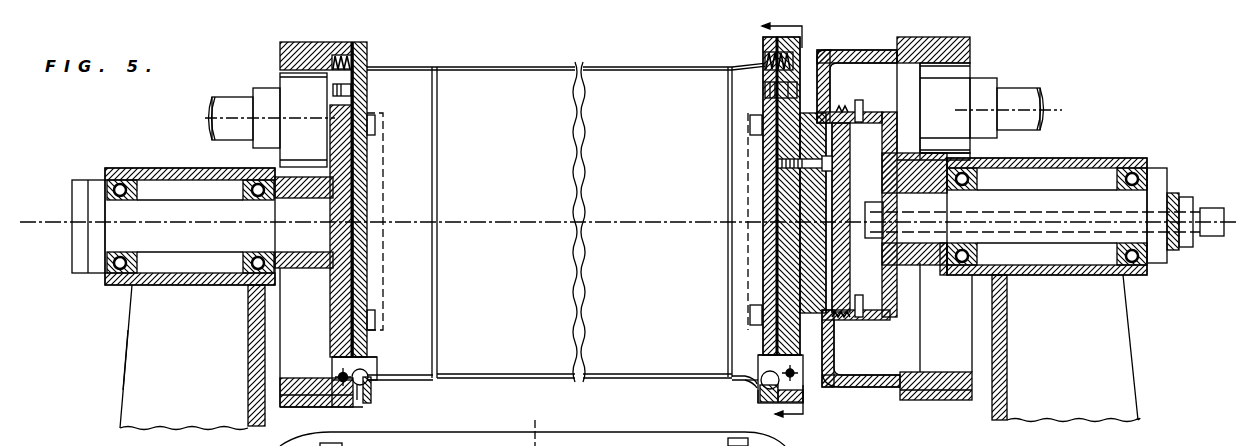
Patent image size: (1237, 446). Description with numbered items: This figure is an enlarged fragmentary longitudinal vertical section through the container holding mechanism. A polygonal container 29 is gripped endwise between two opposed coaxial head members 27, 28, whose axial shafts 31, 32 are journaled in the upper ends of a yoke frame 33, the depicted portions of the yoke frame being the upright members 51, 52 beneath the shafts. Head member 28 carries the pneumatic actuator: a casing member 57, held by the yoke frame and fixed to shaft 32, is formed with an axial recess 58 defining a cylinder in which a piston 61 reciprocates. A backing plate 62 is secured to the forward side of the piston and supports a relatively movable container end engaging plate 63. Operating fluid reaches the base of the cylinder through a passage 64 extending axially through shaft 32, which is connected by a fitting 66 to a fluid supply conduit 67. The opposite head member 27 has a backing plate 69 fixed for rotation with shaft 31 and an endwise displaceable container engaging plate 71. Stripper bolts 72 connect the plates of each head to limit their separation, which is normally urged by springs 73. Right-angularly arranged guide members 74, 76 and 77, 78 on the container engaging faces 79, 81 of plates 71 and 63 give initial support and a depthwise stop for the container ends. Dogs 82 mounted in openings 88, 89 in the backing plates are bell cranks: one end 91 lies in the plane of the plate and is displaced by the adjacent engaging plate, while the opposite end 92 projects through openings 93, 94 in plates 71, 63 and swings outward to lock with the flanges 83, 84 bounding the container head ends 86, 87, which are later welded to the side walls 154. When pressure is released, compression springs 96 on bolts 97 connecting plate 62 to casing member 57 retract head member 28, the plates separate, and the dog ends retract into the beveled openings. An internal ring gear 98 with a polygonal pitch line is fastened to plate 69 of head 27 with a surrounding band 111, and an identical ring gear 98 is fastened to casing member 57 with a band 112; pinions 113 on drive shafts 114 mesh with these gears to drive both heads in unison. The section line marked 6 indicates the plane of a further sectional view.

The section line 6- 6 is at (790, 227).
The head member 27 is at (344, 406).
The head member 28 is at (758, 397).
The polygonal container 29 is at (554, 378).
The shaft 31 is at (213, 247).
The shaft 32 is at (1073, 258).
The yoke frame 33 is at (121, 386).
The left side shield 51 is at (135, 342).
The right side shield 52 is at (1125, 328).
The casing member 57 is at (875, 388).
The axial recess 58 is at (882, 312).
The piston 61 is at (790, 291).
The backing plate 62 is at (800, 243).
The container end engaging plate 63 is at (800, 182).
The passage 64 is at (1045, 210).
The fitting 66 is at (1190, 194).
The fluid supply conduit 67 is at (1212, 237).
The backing plate 69 is at (331, 318).
The container engaging plate 71 is at (368, 284).
The stripper bolts 72 is at (355, 88).
The springs 73 is at (368, 62).
The guide member 74 is at (372, 392).
The guide member 76 is at (385, 192).
The guide member 77 is at (758, 383).
The guide member 78 is at (746, 145).
The container engaging face 79 is at (368, 238).
The container engaging face 81 is at (775, 186).
The dogs 82 is at (376, 358).
The flange 83 is at (435, 381).
The flange 84 is at (742, 375).
The head end 86 is at (438, 287).
The head end 87 is at (728, 310).
The opening 88 is at (332, 360).
The opening 89 is at (830, 330).
The dog end 91 is at (355, 395).
The dog end 92 is at (369, 373).
The opening 93 is at (369, 356).
The opening 94 is at (760, 352).
The compression springs 96 is at (850, 108).
The bolts 97 is at (860, 110).
The internal ring gear 98 is at (283, 62).
The band 111 is at (311, 407).
The band 112 is at (942, 400).
The pinions 113 is at (282, 152).
The drive shafts 114 is at (215, 104).
The side walls 154 is at (556, 72).